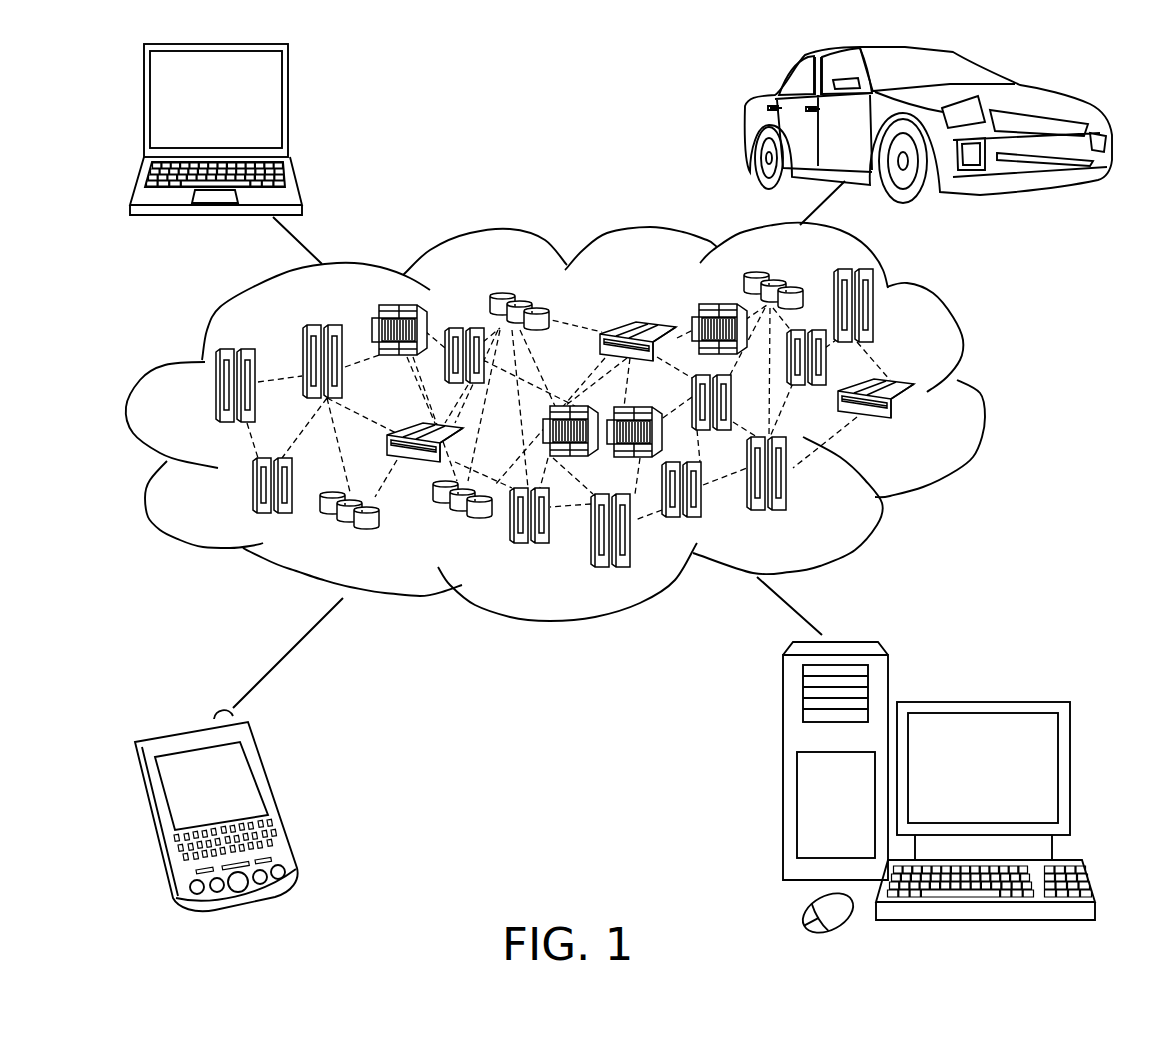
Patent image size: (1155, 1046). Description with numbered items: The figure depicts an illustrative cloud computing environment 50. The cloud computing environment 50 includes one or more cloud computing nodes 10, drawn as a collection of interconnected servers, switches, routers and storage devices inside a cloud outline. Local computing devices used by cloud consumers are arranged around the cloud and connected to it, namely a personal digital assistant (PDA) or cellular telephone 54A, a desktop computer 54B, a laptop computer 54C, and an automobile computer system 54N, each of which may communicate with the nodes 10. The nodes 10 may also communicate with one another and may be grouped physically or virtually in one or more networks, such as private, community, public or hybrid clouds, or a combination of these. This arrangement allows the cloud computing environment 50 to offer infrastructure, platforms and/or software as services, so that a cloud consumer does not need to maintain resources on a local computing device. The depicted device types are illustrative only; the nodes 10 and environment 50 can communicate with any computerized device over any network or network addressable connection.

The cloud computing nodes 10 is at (918, 427).
The cloud computing environment 50 is at (983, 395).
The personal digital assistant (PDA) or cellular telephone 54A is at (277, 800).
The desktop computer 54B is at (978, 702).
The laptop computer 54C is at (288, 108).
The automobile computer system 54N is at (748, 126).